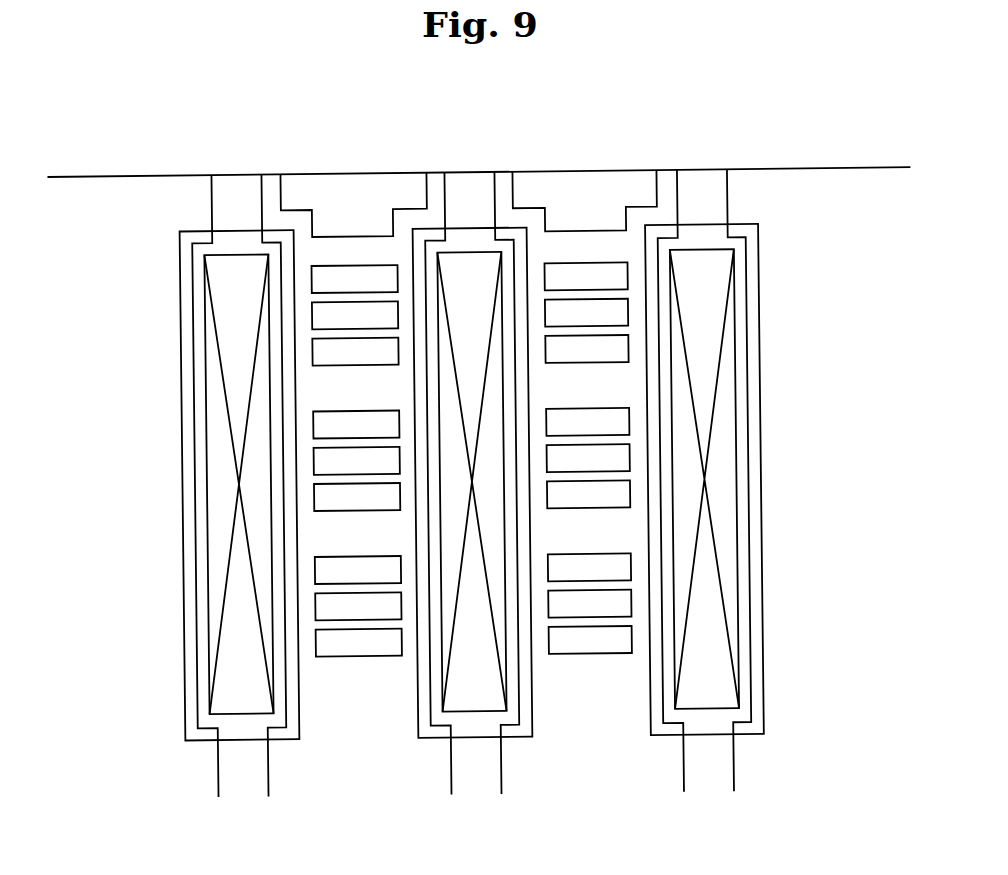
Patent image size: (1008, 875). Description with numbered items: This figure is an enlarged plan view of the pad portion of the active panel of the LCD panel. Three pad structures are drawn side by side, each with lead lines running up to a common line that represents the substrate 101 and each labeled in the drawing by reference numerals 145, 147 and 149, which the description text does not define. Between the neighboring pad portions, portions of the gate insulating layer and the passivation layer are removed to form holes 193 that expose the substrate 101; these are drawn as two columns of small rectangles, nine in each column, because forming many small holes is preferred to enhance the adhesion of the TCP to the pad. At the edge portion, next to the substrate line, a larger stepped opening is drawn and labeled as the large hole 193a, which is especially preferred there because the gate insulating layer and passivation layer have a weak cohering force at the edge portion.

The substrate 101 is at (137, 197).
The coil 145 is at (205, 636).
The outer frame 147 is at (197, 734).
The lead terminal 149 is at (478, 712).
The holes 193 is at (353, 668).
The large hole 193a is at (353, 174).